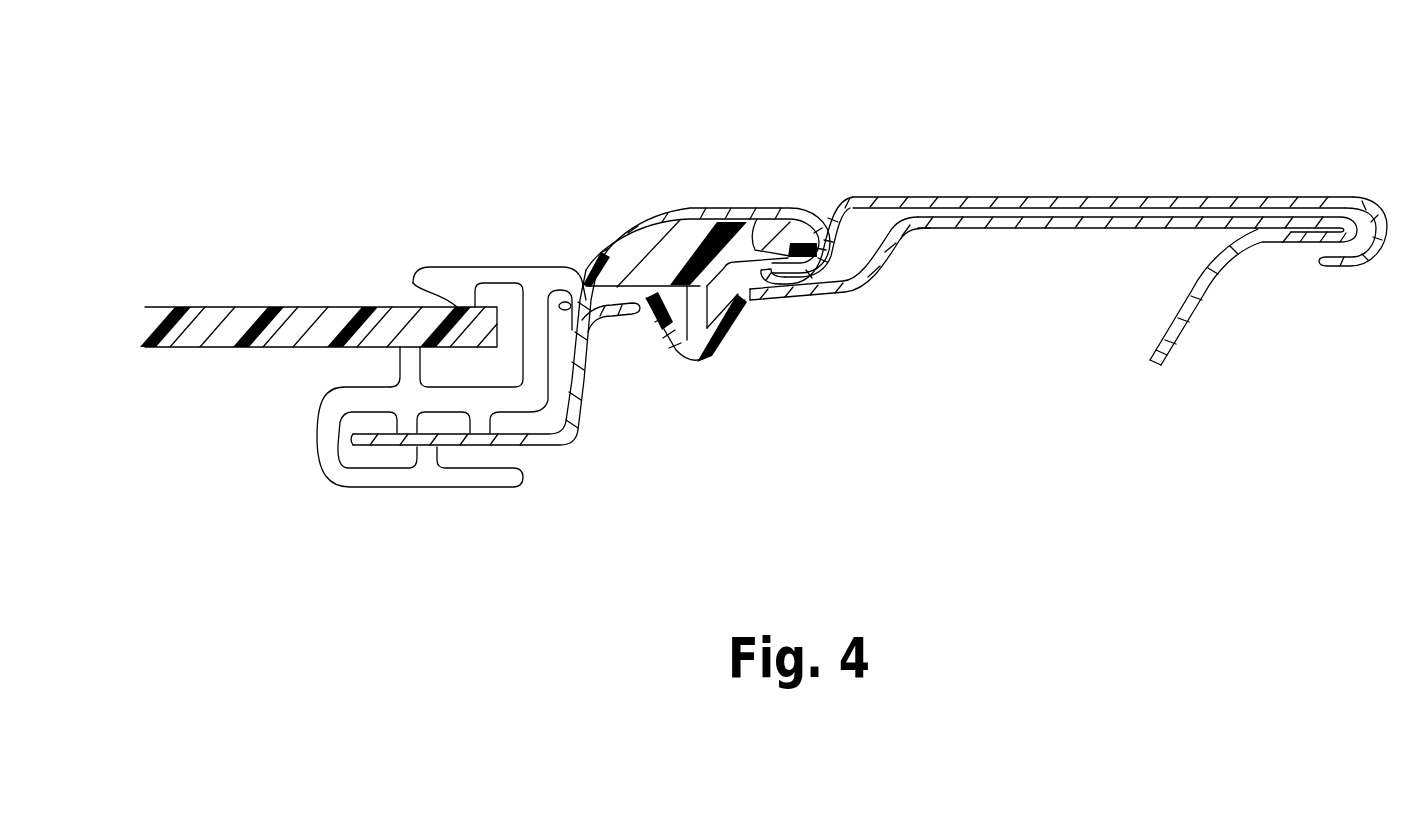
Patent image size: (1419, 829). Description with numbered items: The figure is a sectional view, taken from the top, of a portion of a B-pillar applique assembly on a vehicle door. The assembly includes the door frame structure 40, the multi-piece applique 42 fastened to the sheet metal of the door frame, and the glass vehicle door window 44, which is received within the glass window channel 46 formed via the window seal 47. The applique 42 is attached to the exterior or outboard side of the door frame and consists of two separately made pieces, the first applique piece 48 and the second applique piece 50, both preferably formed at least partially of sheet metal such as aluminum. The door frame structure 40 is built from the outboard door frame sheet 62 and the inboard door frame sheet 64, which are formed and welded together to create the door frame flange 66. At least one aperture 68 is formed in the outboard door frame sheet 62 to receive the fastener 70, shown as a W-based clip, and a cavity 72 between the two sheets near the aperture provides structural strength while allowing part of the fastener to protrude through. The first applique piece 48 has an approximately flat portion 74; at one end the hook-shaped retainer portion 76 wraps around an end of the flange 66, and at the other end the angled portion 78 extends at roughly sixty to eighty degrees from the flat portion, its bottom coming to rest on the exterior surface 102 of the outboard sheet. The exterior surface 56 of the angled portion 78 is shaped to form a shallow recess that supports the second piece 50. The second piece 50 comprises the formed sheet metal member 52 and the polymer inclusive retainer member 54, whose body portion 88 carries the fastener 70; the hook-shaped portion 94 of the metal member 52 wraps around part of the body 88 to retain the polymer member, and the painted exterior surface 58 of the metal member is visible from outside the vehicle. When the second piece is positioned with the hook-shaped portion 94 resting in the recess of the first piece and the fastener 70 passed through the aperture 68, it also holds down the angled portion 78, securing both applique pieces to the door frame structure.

The door frame structure 40 is at (1180, 298).
The multi-piece applique 42 is at (871, 128).
The glass vehicle door window 44 is at (296, 317).
The glass window channel 46 is at (457, 363).
The window seal 47 is at (507, 268).
The first applique piece 48 is at (927, 197).
The second applique piece 50 is at (692, 210).
The formed sheet metal member 52 is at (660, 210).
The polymer inclusive retainer member 54 is at (620, 280).
The exterior surface of angled portion 56 is at (1127, 197).
The exterior surface of metal member 58 is at (730, 210).
The outboard door frame sheet 62 is at (583, 398).
The inboard door frame sheet 64 is at (1180, 327).
The door frame flange 66 is at (1262, 235).
The aperture 68 is at (746, 325).
The fastener 70 is at (687, 352).
The cavity 72 is at (790, 323).
The flat portion 74 is at (1083, 197).
The hook-shaped retainer portion 76 is at (1397, 210).
The angled portion 78 is at (893, 215).
The body portion 88 is at (770, 210).
The hook-shaped portion 94 is at (823, 210).
The exterior surface of outboard door frame sheet 102 is at (825, 322).